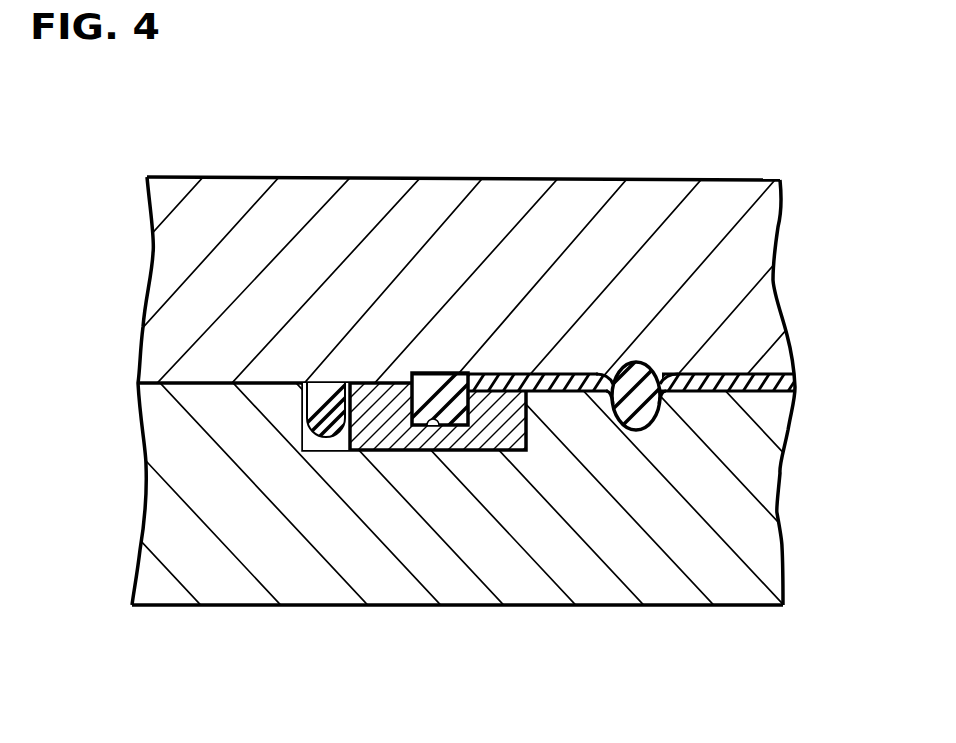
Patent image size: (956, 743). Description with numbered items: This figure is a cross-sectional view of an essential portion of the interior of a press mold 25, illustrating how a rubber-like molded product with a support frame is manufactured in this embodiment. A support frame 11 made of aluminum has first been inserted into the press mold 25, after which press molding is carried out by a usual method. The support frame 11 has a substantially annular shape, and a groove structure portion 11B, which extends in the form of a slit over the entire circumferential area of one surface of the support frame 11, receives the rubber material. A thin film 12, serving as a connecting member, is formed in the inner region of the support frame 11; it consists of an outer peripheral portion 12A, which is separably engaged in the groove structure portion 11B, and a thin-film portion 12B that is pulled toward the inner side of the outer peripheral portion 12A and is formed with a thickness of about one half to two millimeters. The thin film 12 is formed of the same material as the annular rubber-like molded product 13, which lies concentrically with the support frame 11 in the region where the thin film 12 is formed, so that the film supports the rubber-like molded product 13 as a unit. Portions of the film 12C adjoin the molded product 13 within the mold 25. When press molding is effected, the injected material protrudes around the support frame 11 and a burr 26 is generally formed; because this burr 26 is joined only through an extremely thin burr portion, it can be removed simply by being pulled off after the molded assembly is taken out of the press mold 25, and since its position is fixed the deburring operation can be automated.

The support frame 11 is at (471, 446).
The groove structure portion 11B is at (433, 426).
The thin film 12 is at (563, 130).
The outer peripheral portion 12A is at (447, 374).
The thin-film portion 12B is at (546, 374).
The fillet portion of coating layer 12C is at (660, 394).
The rubber-like molded product 13 is at (650, 430).
The press mold 25 is at (793, 284).
The burr 26 is at (321, 438).